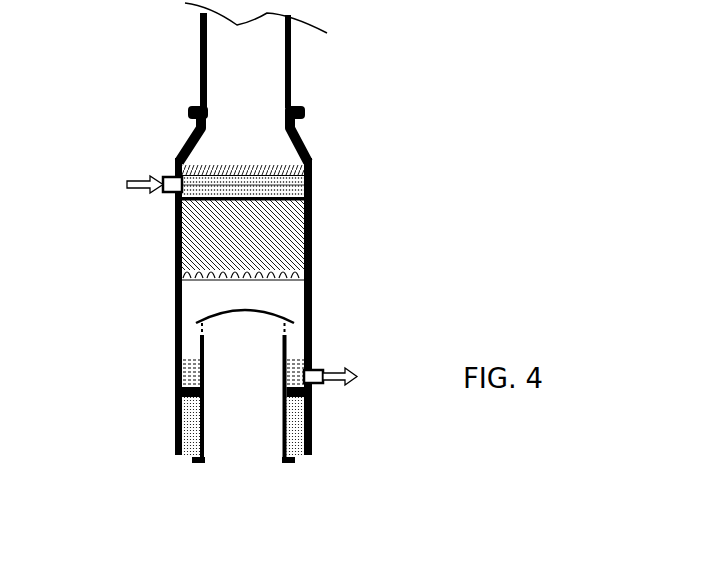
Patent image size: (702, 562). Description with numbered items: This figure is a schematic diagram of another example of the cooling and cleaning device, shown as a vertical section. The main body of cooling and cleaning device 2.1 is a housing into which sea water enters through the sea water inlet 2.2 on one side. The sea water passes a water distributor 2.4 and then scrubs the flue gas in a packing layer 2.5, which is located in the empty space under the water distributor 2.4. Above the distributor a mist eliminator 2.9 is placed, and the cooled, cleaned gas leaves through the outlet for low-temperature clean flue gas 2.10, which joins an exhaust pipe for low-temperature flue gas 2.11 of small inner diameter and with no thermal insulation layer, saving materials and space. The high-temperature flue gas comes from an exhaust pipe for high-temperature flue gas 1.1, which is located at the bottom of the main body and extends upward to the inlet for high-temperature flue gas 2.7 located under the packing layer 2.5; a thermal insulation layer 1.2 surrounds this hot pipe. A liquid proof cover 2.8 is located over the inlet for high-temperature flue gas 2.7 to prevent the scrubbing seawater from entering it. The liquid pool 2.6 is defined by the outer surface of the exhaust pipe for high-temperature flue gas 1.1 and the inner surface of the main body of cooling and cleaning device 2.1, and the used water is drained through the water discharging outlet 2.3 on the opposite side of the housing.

The exhaust pipe for high-temperature flue gas 1.1 is at (185, 454).
The thermal insulation layer 1.2 is at (200, 413).
The main body of cooling and cleaning device 2.1 is at (213, 306).
The sea water inlet 2.2 is at (148, 163).
The water discharging outlet 2.3 is at (341, 354).
The water distributor 2.4 is at (269, 172).
The packing layer 2.5 is at (262, 233).
The liquid pool 2.6 is at (203, 337).
The inlet for high-temperature flue gas 2.7 is at (289, 375).
The liquid proof cover 2.8 is at (287, 283).
The mist eliminator 2.9 is at (220, 137).
The outlet for low-temperature clean flue gas 2.10 is at (281, 65).
The exhaust pipe for low-temperature flue gas 2.11 is at (234, 82).